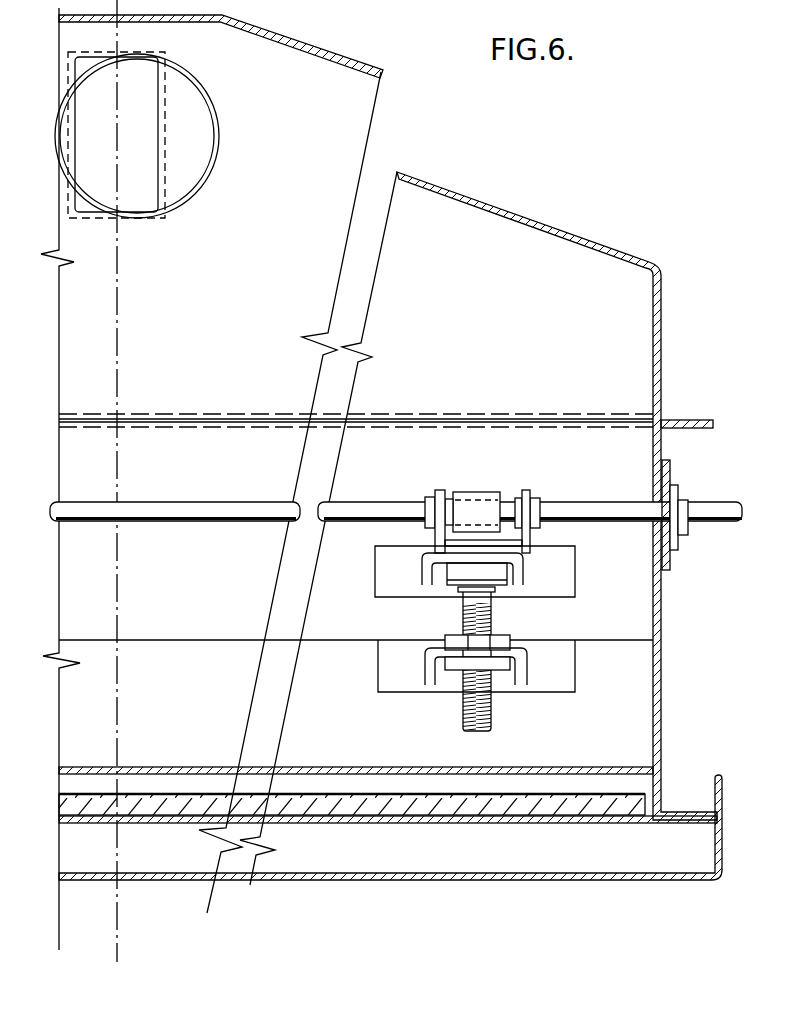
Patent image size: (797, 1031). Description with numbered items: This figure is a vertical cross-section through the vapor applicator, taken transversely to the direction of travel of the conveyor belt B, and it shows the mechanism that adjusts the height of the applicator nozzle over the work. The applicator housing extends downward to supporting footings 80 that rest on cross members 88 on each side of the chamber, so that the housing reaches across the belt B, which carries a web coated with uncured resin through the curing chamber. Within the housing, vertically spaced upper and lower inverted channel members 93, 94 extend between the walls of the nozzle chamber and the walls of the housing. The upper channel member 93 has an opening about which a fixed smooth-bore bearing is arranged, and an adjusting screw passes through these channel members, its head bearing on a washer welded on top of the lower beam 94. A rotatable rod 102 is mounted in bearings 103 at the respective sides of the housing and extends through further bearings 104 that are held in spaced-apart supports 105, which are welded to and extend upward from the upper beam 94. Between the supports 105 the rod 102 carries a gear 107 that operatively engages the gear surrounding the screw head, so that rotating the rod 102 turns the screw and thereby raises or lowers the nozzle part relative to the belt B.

The supporting footings 80 is at (693, 813).
The cross members 88 is at (720, 833).
The upper inverted channel member 93 is at (527, 668).
The lower inverted channel member 94 is at (523, 578).
The rotatable rod 102 is at (578, 502).
The bearings 103 is at (679, 497).
The bearings 104 is at (533, 497).
The spaced-apart supports 105 is at (530, 541).
The gear 107 is at (470, 492).
The conveyor belt B is at (452, 807).